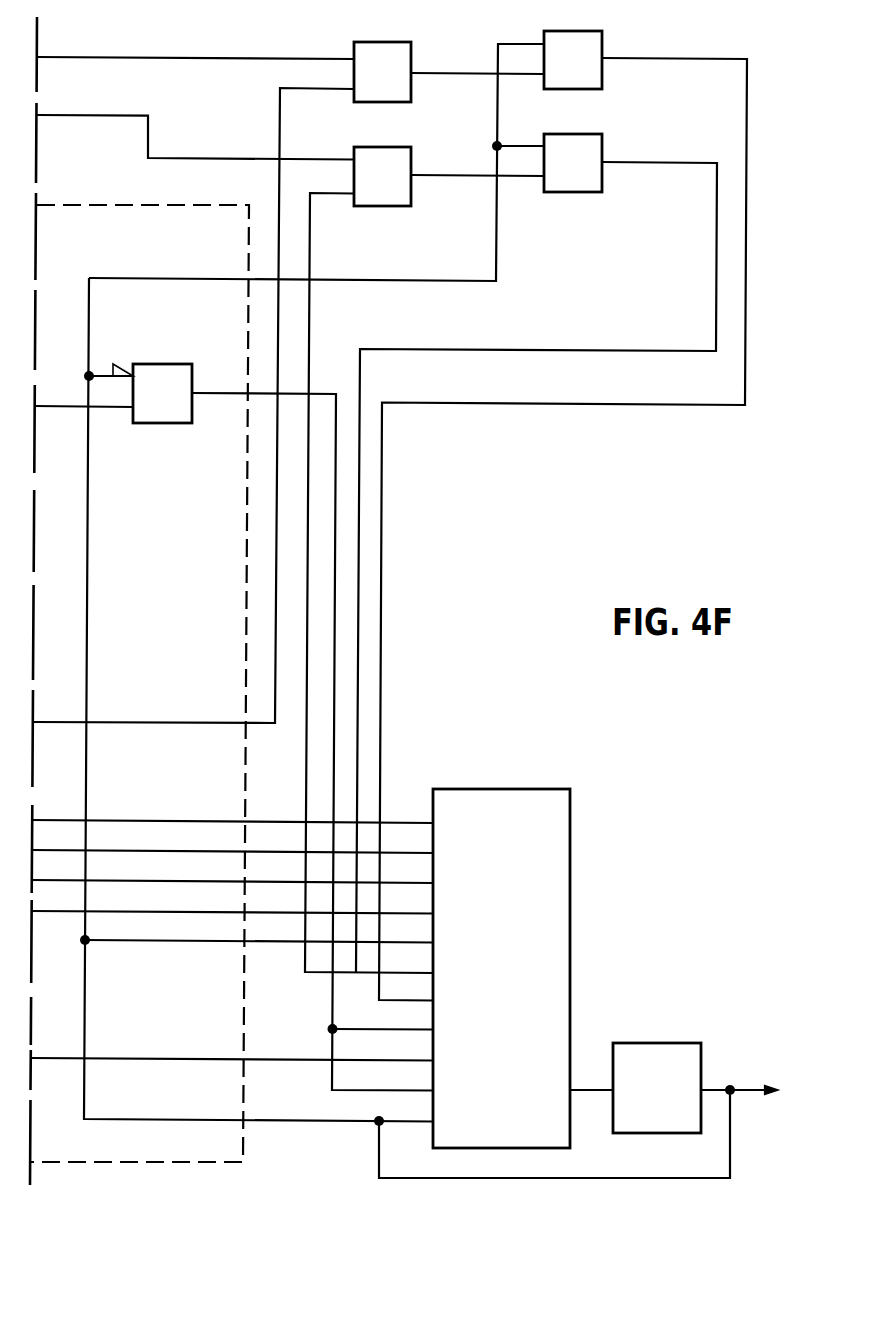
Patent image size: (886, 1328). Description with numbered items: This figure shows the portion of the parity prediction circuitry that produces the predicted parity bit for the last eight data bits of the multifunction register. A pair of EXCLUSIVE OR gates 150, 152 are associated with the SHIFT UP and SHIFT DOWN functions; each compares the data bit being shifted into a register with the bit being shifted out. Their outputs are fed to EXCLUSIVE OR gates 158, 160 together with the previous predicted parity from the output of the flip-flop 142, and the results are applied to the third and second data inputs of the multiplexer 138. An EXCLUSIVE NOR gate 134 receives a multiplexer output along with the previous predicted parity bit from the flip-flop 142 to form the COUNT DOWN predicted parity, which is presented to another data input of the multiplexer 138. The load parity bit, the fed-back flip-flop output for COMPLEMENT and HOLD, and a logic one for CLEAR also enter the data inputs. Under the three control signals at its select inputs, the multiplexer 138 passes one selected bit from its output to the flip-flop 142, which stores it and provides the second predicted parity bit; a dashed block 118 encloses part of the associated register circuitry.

The dashed block (register/section) 118 is at (246, 627).
The EXCLUSIVE NOR gate 134 is at (150, 364).
The multiplexer (MUX) 138 is at (510, 789).
The flip-flop 142 is at (652, 1043).
The EXCLUSIVE OR gate 150 is at (411, 97).
The EXCLUSIVE OR gate 152 is at (378, 206).
The EXCLUSIVE OR gate 158 is at (600, 89).
The EXCLUSIVE OR gate 160 is at (570, 192).